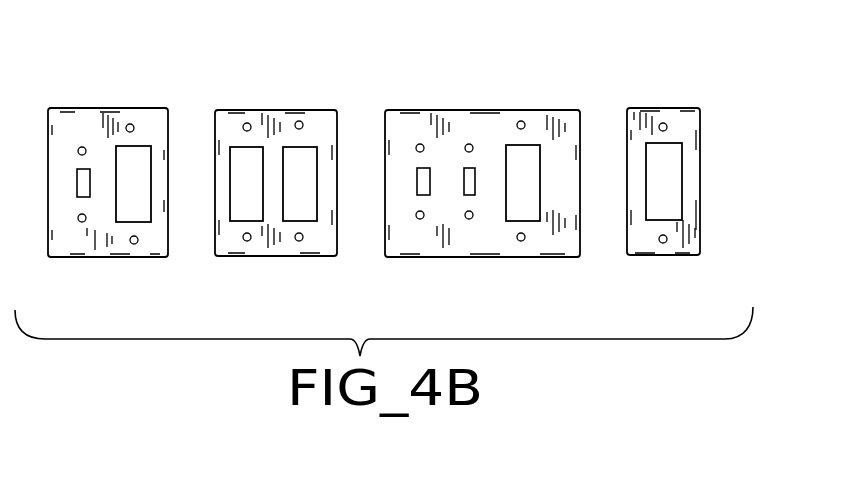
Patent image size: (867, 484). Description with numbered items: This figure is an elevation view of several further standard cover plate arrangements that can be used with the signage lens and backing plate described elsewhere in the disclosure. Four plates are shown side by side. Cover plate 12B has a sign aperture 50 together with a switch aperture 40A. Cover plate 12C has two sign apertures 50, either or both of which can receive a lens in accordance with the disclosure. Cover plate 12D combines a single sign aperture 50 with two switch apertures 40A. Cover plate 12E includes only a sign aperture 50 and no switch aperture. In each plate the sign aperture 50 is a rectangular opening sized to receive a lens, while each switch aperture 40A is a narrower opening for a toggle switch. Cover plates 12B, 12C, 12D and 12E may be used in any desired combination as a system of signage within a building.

The cover plate 12B is at (106, 80).
The cover plate 12C is at (274, 85).
The cover plate 12D is at (473, 88).
The cover plate 12E is at (673, 88).
The switch aperture 40A is at (77, 195).
The sign aperture 50 is at (135, 195).